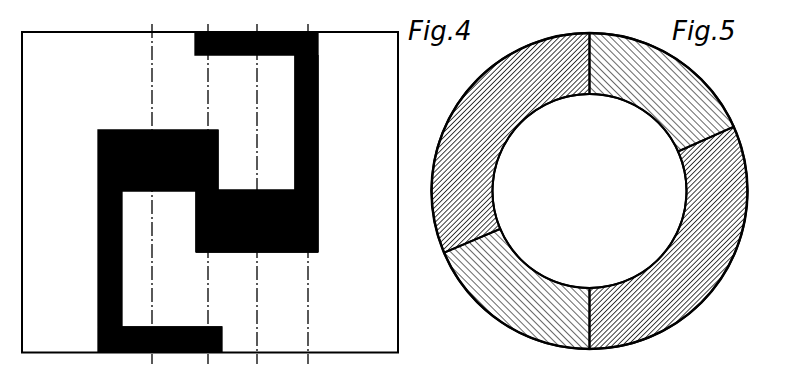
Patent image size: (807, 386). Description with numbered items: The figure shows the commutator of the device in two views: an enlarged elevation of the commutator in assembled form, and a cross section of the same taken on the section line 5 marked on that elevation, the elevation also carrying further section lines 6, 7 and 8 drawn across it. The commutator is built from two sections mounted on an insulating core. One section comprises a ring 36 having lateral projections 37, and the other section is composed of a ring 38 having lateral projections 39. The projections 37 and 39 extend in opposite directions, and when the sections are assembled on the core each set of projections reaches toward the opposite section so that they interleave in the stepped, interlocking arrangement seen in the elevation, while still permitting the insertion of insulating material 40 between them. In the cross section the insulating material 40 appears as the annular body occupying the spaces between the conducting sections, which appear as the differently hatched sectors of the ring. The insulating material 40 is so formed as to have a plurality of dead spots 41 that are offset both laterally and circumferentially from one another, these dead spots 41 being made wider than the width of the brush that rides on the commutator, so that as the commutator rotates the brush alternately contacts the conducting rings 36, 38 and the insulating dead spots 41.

In FIG. 4, the ring 36 is at (42, 218).
In FIG. 4, the lateral projections 37 is at (182, 115).
In FIG. 4, the ring 38 is at (344, 153).
In FIG. 4, the lateral projections 39 is at (230, 305).
In FIG. 5, the lateral projections 39 is at (696, 77).
In FIG. 4, the insulating material 40 is at (319, 127).
In FIG. 5, the insulating material 40 is at (466, 96).
In FIG. 4, the dead spots 41 is at (125, 129).
In FIG. 5, the dead spots 41 is at (590, 209).
In FIG. 4, the section line 5— 5 is at (307, 193).
In FIG. 4, the section line 6- 6 is at (256, 193).
In FIG. 4, the section line 7- 7 is at (151, 193).
In FIG. 4, the section line 8- 8 is at (207, 193).